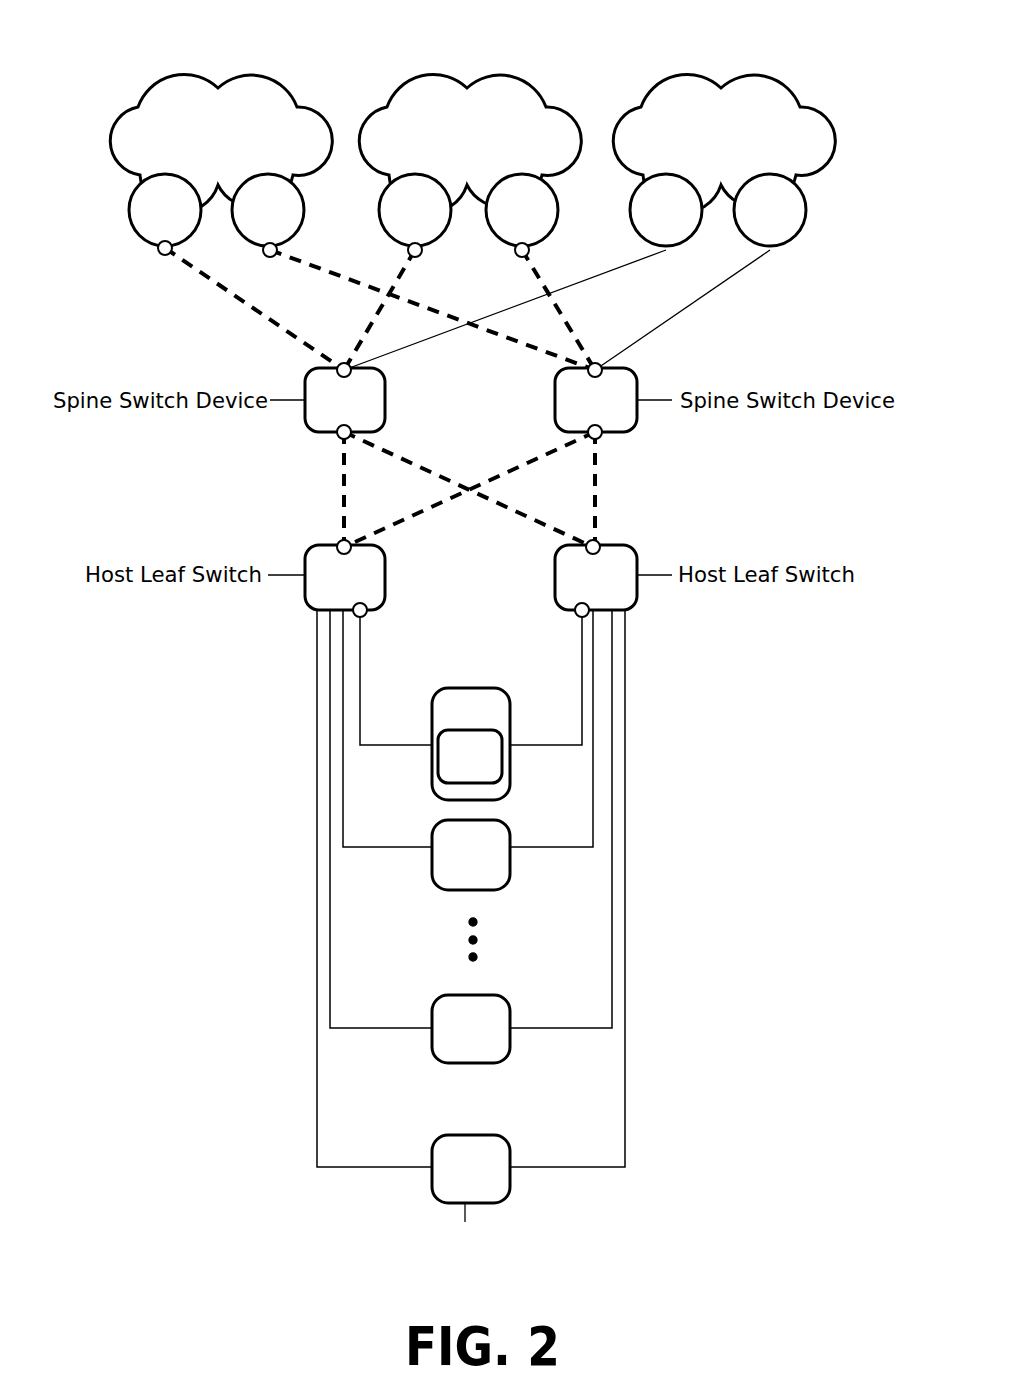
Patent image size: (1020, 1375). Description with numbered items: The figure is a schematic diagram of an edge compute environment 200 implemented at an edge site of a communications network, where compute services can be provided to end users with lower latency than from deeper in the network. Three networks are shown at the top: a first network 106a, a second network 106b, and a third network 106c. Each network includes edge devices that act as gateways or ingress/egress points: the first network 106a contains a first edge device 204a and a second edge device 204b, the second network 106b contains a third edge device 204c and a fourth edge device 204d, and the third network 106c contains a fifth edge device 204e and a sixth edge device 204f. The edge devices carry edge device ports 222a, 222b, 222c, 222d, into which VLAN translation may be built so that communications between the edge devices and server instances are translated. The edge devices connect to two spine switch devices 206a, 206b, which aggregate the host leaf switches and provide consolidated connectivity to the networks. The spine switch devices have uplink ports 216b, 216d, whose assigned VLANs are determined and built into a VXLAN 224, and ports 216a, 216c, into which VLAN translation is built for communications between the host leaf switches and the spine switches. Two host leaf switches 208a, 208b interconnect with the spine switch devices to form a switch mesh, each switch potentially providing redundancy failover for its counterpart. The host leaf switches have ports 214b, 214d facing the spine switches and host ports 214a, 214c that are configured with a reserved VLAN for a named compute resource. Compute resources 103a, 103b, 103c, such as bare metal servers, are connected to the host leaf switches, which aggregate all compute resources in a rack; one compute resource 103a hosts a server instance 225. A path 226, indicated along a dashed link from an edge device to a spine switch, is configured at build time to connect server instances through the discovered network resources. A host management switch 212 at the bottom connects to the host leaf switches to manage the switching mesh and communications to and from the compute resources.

The edge compute environment 200 is at (70, 55).
The first network 106a is at (190, 167).
The second network 106b is at (470, 143).
The third network 106c is at (724, 143).
The first edge device 204a is at (137, 224).
The second edge device 204b is at (240, 224).
The third edge device 204c is at (387, 224).
The fourth edge device 204d is at (494, 224).
The fifth edge device 204e is at (638, 224).
The sixth edge device 204f is at (743, 224).
The edge device port 222a is at (160, 253).
The edge device port 222b is at (270, 257).
The edge device port 222c is at (422, 252).
The edge device port 222d is at (529, 252).
The path 226 is at (210, 296).
The spine switch port 216a is at (340, 438).
The uplink port 216b is at (337, 370).
The spine switch port 216c is at (600, 438).
The uplink port 216d is at (602, 370).
The spine switch device 206a is at (317, 412).
The spine switch device 206b is at (568, 412).
The VXLAN 224 is at (328, 490).
The host leaf switch port 214a is at (366, 615).
The host leaf switch port 214b is at (337, 547).
The host leaf switch port 214c is at (577, 615).
The host leaf switch port 214d is at (598, 545).
The host leaf switch 208a is at (317, 589).
The host leaf switch 208b is at (568, 589).
The compute resource 103a is at (444, 722).
The compute resource 103b is at (444, 866).
The compute resource 103c is at (444, 1041).
The server instance 225 is at (450, 767).
The host management switch 212 is at (451, 1179).